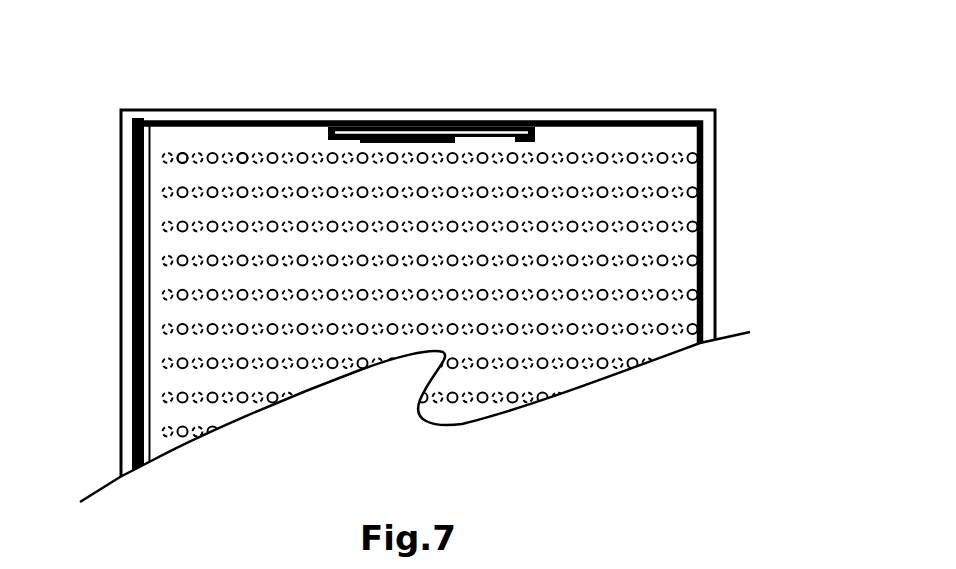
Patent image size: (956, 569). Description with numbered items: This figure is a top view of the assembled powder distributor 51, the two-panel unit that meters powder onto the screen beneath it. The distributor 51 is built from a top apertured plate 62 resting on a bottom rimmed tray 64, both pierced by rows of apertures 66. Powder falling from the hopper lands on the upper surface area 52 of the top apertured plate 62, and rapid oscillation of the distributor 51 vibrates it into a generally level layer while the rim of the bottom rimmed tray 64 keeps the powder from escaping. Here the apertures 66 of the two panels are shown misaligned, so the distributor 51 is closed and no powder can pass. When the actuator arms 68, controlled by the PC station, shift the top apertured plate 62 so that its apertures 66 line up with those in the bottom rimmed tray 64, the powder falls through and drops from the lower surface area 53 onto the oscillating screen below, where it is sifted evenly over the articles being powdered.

The powder distributor 51 is at (694, 100).
The upper surface area 52 is at (600, 140).
The lower surface area 53 is at (140, 265).
The top apertured plate 62 is at (662, 175).
The bottom rimmed tray 64 is at (703, 238).
The apertures 66 is at (183, 153).
The actuator arms 68 is at (422, 125).